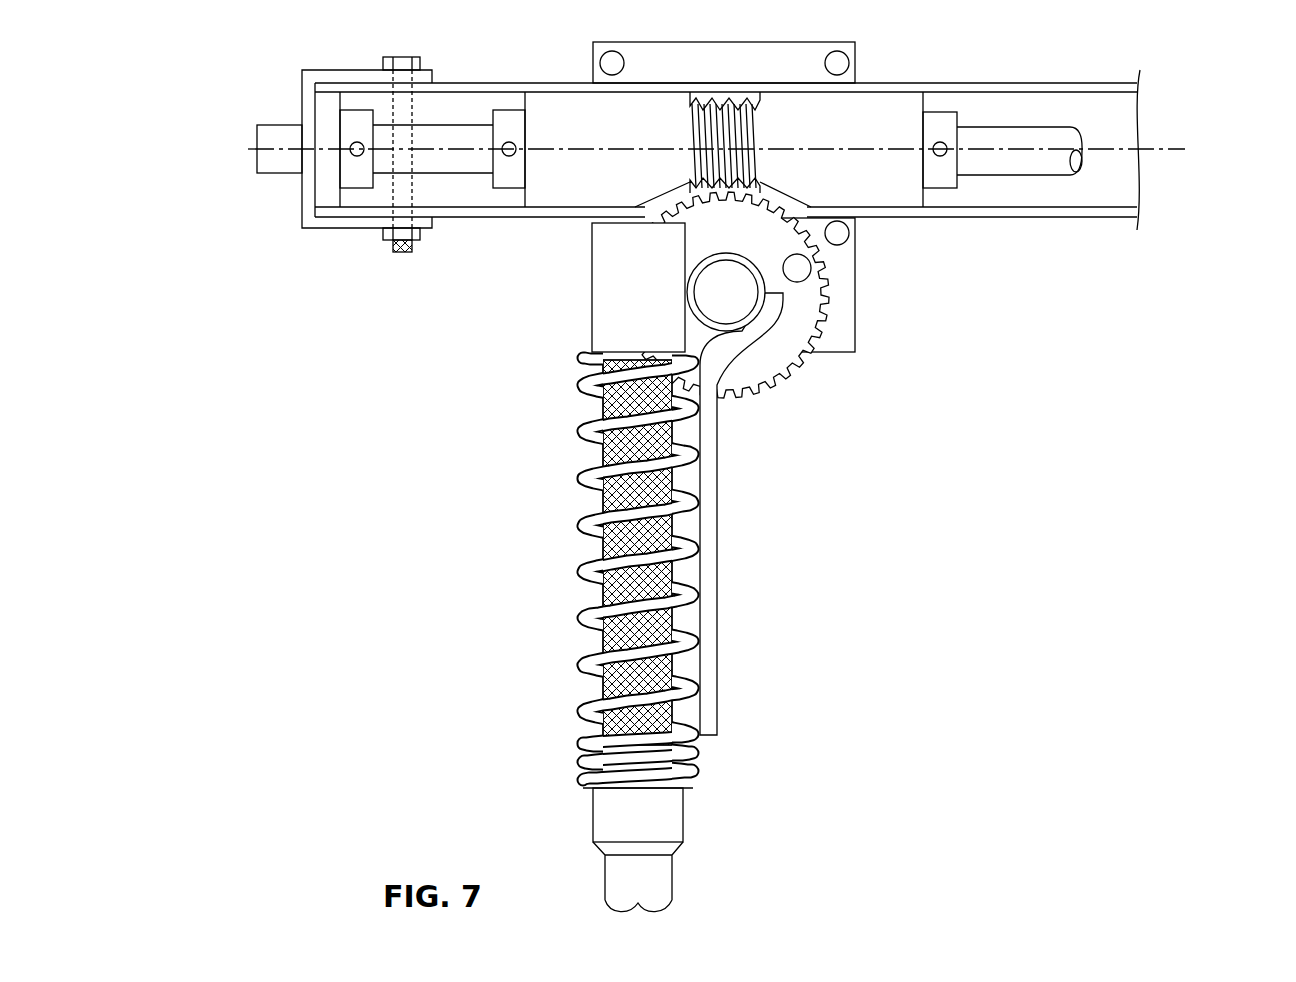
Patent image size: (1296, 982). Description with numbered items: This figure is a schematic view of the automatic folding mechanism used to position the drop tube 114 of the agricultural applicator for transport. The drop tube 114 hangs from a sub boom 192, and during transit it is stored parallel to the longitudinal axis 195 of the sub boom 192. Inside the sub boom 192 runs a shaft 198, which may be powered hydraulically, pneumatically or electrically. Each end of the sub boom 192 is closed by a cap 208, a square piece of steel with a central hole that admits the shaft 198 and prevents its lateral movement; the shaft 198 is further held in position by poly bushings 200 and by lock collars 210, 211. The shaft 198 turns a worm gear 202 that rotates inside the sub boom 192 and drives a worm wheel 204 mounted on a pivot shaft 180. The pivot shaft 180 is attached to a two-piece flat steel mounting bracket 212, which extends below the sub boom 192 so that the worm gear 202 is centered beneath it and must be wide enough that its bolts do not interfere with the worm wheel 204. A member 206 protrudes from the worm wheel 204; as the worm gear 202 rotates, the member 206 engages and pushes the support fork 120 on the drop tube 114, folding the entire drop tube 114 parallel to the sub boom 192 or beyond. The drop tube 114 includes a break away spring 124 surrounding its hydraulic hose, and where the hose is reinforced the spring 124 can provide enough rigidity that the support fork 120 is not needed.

The drop tube 114 is at (592, 567).
The support fork 120 is at (606, 540).
The break away spring 124 is at (592, 458).
The pivot shaft 180 is at (738, 305).
The sub boom 192 is at (1064, 218).
The longitudinal axis 195 is at (1172, 152).
The shaft 198 is at (1012, 125).
The bushings 200 is at (314, 204).
The worm gear 202 is at (721, 98).
The worm wheel 204 is at (762, 390).
The member 206 is at (797, 282).
The cap 208 is at (307, 78).
The lock collar 210 is at (359, 175).
The lock collar 211 is at (511, 175).
The mounting bracket 212 is at (852, 277).